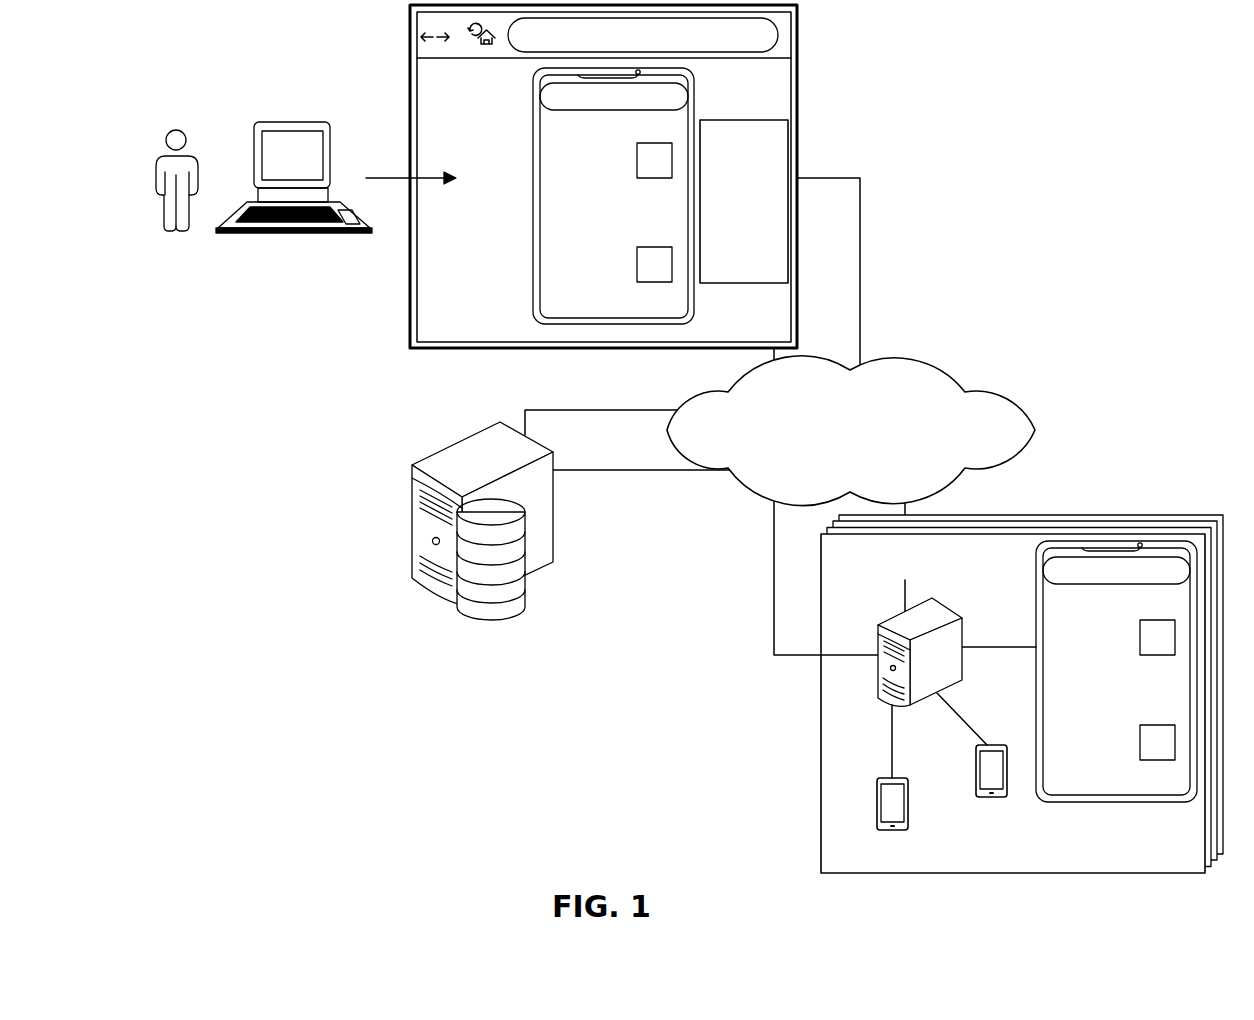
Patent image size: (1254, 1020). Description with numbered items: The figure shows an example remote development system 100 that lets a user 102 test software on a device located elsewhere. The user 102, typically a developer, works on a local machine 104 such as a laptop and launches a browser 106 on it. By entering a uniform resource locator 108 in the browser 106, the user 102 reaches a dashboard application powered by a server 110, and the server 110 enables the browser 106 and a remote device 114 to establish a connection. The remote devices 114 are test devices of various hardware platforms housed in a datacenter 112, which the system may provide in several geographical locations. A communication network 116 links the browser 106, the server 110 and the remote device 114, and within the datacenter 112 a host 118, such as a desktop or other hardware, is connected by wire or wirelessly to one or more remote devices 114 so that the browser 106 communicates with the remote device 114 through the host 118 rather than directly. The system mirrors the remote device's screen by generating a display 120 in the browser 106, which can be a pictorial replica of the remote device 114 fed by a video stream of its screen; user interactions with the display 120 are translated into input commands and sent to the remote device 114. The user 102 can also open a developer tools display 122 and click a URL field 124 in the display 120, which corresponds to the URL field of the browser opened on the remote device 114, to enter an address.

The remote development system 100 is at (1076, 82).
The user 102 is at (172, 130).
The local machine 104 is at (290, 122).
The browser 106 is at (797, 50).
The uniform resource locator 108 is at (778, 42).
The server 110 is at (424, 427).
The datacenter 112 is at (1158, 515).
The remote device 114 is at (893, 830).
The communication network 116 is at (905, 357).
The host 118 is at (950, 608).
The display 120 is at (613, 194).
The developer tools display 122 is at (712, 285).
The URL field 124 is at (688, 97).